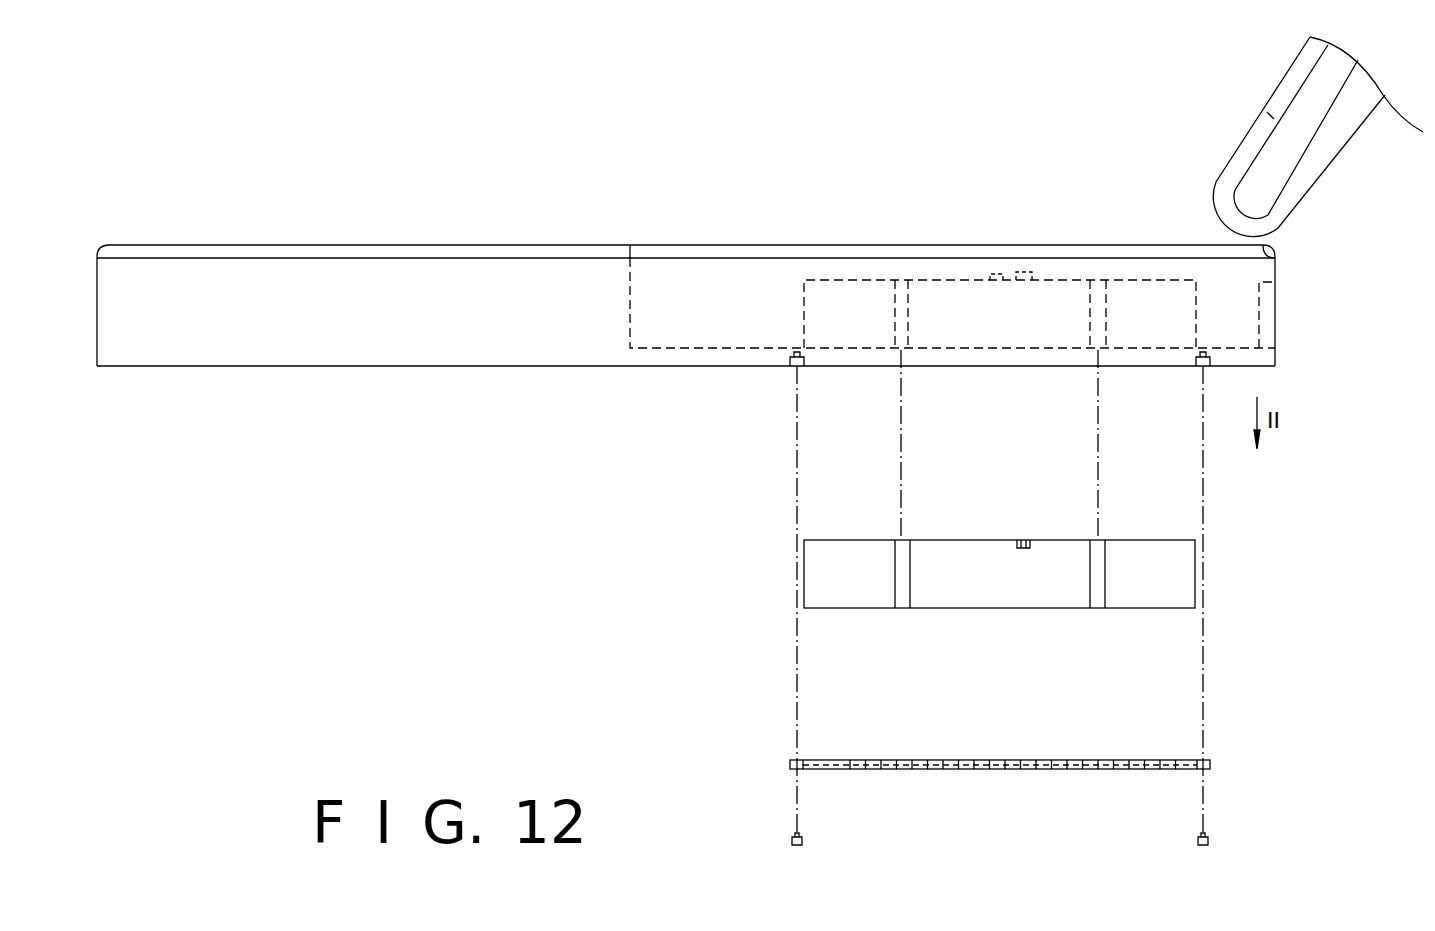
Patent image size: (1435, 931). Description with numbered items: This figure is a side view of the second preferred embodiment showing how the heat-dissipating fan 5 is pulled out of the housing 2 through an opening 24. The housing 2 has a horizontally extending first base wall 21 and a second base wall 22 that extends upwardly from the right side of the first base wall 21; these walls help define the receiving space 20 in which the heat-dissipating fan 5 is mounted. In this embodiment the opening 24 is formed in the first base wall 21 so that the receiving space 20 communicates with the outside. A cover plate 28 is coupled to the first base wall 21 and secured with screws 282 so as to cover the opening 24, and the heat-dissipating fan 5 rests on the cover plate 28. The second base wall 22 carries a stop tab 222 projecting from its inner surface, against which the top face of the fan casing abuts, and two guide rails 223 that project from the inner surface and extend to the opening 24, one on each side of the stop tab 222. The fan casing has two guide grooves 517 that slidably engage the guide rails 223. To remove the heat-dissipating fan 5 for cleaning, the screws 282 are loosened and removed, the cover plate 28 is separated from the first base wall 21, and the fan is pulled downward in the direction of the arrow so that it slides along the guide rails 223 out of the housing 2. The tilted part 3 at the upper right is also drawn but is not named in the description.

The housing 2 is at (281, 233).
The cover / hinge portion 3 is at (1297, 184).
The heat-dissipating fan 5 is at (855, 618).
The receiving space 20 is at (788, 320).
The first base wall 21 is at (685, 367).
The second base wall 22 is at (500, 300).
The opening 24 is at (857, 350).
The cover plate 28 is at (893, 760).
The stop tab 222 is at (995, 276).
The guide rails 223 is at (903, 322).
The screws 282 is at (793, 838).
The guide grooves 517 is at (902, 582).